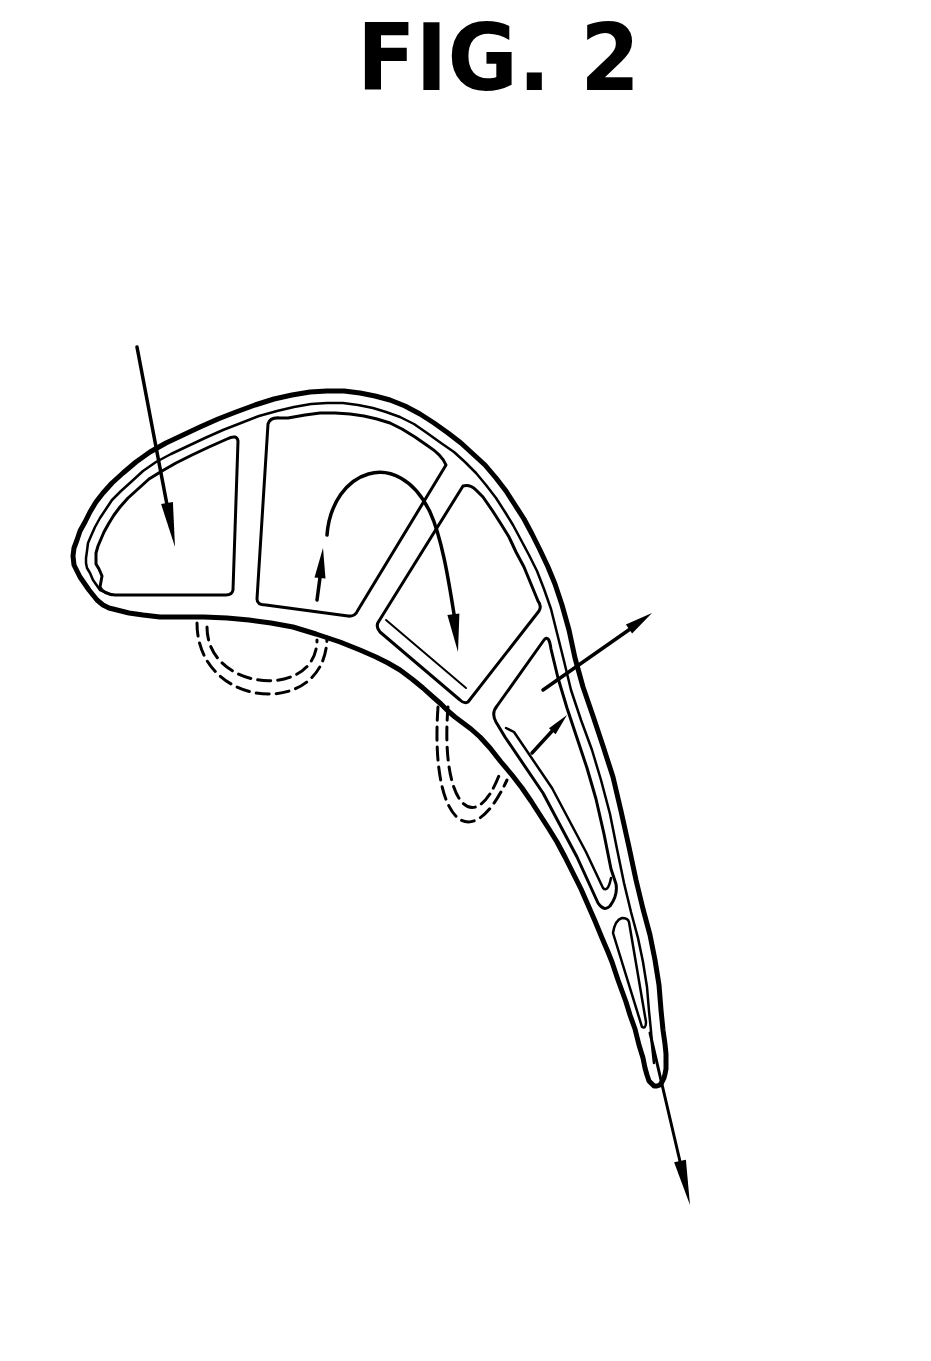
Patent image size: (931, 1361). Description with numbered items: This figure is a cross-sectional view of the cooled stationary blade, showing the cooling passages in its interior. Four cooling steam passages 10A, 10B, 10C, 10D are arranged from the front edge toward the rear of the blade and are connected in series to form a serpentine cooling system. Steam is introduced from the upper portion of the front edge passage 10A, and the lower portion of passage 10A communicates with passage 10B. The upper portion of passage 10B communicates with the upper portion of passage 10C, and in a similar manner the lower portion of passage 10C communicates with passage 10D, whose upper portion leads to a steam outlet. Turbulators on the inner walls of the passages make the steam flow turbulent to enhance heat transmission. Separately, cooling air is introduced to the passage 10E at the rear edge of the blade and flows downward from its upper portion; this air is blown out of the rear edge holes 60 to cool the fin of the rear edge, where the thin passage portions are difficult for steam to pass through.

The cooling steam passage 10A is at (200, 480).
The cooling steam passage 10B is at (317, 467).
The cooling steam passage 10C is at (480, 540).
The cooling steam passage 10D is at (580, 648).
The passage 10E is at (635, 937).
The rear edge holes 60 is at (668, 1057).